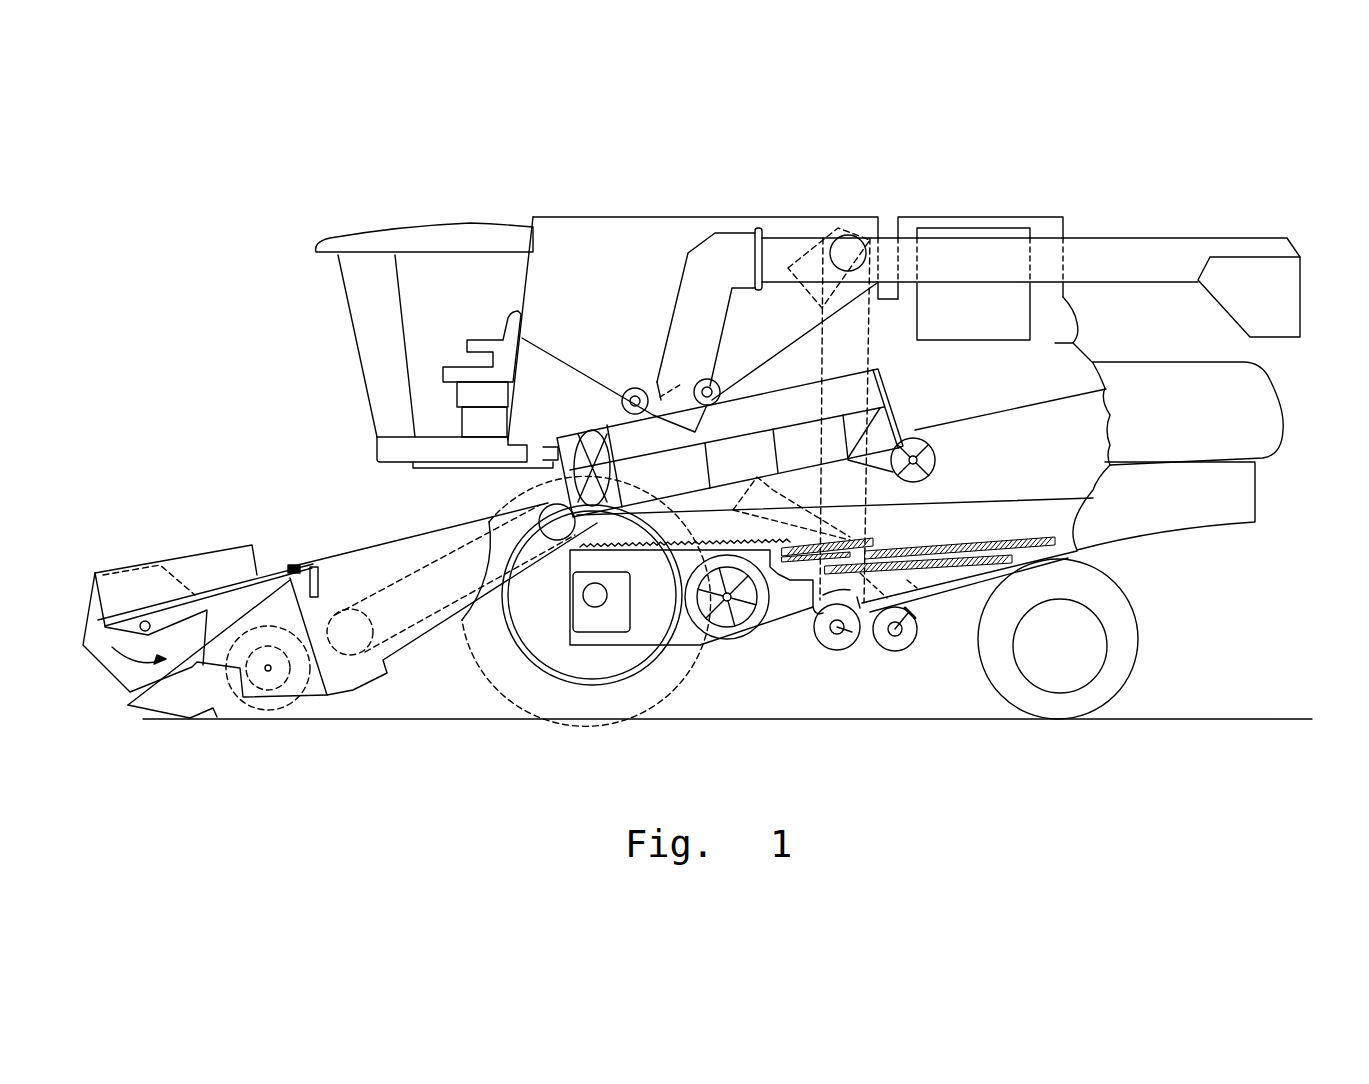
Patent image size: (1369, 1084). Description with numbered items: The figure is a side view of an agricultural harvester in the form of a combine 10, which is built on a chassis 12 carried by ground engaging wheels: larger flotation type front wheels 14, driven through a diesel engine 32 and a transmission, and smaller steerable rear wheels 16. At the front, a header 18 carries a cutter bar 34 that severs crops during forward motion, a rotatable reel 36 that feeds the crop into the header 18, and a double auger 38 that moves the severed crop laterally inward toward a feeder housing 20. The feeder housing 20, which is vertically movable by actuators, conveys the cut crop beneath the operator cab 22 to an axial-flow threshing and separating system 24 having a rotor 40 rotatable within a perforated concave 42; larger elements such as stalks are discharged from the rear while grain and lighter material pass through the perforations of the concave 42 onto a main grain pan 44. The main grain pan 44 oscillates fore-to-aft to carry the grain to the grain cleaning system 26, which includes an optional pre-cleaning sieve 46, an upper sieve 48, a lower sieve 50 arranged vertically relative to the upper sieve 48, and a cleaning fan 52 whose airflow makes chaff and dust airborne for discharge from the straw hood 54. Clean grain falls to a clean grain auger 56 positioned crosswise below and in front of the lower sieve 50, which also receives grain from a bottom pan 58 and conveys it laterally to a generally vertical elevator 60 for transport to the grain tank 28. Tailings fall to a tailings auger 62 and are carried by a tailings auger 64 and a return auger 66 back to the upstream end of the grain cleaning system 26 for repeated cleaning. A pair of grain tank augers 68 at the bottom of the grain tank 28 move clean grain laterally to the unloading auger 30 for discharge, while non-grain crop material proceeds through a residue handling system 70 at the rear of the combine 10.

The combine 10 is at (417, 209).
The chassis 12 is at (1077, 555).
The front wheels 14 is at (498, 678).
The rear wheels 16 is at (1135, 658).
The header 18 is at (182, 543).
The feeder housing 20 is at (392, 550).
The operator cab 22 is at (353, 323).
The threshing and separating system 24 is at (498, 485).
The grain cleaning system 26 is at (787, 652).
The grain tank 28 is at (585, 225).
The unloading auger 30 is at (1153, 247).
The diesel engine 32 is at (960, 230).
The cutter bar 34 is at (217, 710).
The reel 36 is at (90, 615).
The double auger 38 is at (270, 688).
The rotor 40 is at (580, 433).
The concave 42 is at (767, 420).
The main grain pan 44 is at (570, 548).
The pre-cleaning sieve 46 is at (873, 535).
The upper sieve 48 is at (975, 540).
The lower sieve 50 is at (943, 572).
The cleaning fan 52 is at (722, 637).
The straw hood 54 is at (1267, 403).
The clean grain auger 56 is at (838, 650).
The bottom pan 58 is at (993, 577).
The elevator 60 is at (868, 345).
The tailings auger 62 is at (975, 580).
The tailings auger 64 is at (892, 653).
The return auger 66 is at (812, 522).
The grain tank augers 68 is at (633, 387).
The residue handling system 70 is at (1222, 535).